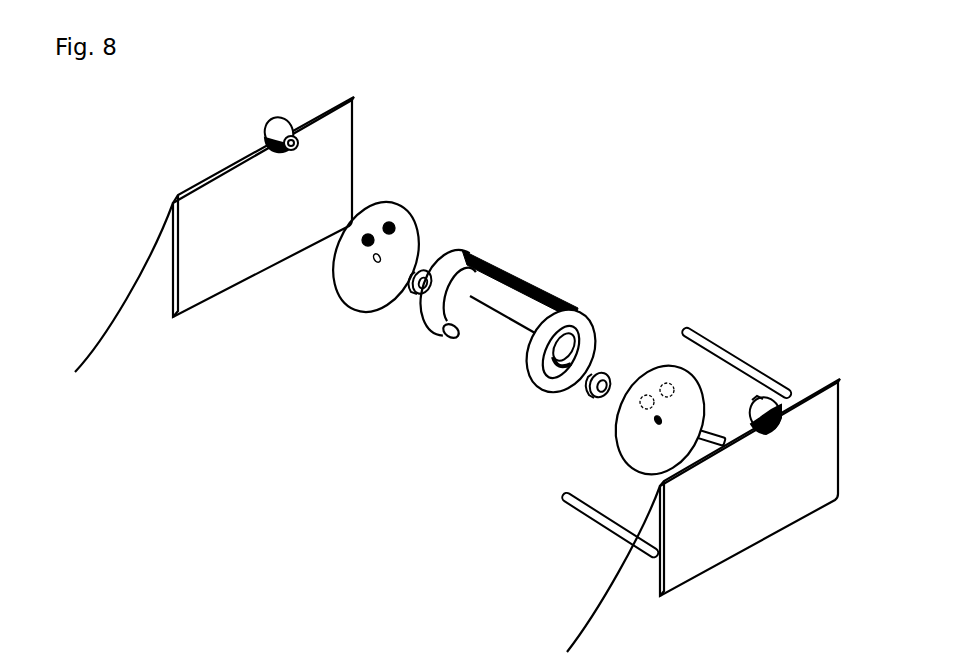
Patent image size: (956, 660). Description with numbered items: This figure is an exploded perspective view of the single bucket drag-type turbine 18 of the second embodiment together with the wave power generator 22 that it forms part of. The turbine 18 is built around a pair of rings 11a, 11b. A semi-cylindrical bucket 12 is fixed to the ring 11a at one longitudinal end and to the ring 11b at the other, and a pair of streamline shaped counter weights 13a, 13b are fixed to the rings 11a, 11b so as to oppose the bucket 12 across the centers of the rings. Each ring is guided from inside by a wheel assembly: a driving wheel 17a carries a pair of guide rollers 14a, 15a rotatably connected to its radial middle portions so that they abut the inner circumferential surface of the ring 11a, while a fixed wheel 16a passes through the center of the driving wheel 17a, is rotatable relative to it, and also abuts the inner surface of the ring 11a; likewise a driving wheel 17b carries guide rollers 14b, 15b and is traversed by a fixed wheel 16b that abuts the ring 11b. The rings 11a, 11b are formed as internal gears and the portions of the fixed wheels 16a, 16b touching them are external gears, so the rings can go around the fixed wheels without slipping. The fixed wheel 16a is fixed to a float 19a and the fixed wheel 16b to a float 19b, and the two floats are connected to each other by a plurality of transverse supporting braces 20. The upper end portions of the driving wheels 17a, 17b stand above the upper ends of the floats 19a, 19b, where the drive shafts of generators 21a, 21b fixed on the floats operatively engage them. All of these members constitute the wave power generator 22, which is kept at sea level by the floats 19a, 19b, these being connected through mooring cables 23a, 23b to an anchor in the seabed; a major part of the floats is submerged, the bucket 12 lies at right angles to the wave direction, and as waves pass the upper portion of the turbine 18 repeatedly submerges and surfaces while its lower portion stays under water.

The ring 11a is at (450, 260).
The ring 11b is at (590, 312).
The semi-cylindrical bucket 12 is at (532, 283).
The streamline shaped counter weight 13a is at (462, 340).
The streamline shaped counter weight 13b is at (560, 385).
The guide roller 14a is at (368, 232).
The guide roller 14b is at (639, 392).
The guide roller 15a is at (395, 222).
The guide roller 15b is at (664, 382).
The fixed wheel 16a is at (414, 294).
The fixed wheel 16b is at (596, 398).
The driving wheel 17a is at (353, 287).
The driving wheel 17b is at (643, 453).
The single bucket drag-type turbine 18 is at (563, 273).
The float 19a is at (200, 290).
The float 19b is at (725, 552).
The transverse supporting brace 20 is at (730, 352).
The generator 21a is at (268, 126).
The generator 21b is at (774, 398).
The wave power generator 22 is at (608, 245).
The mooring cable 23a is at (110, 333).
The mooring cable 23b is at (597, 615).